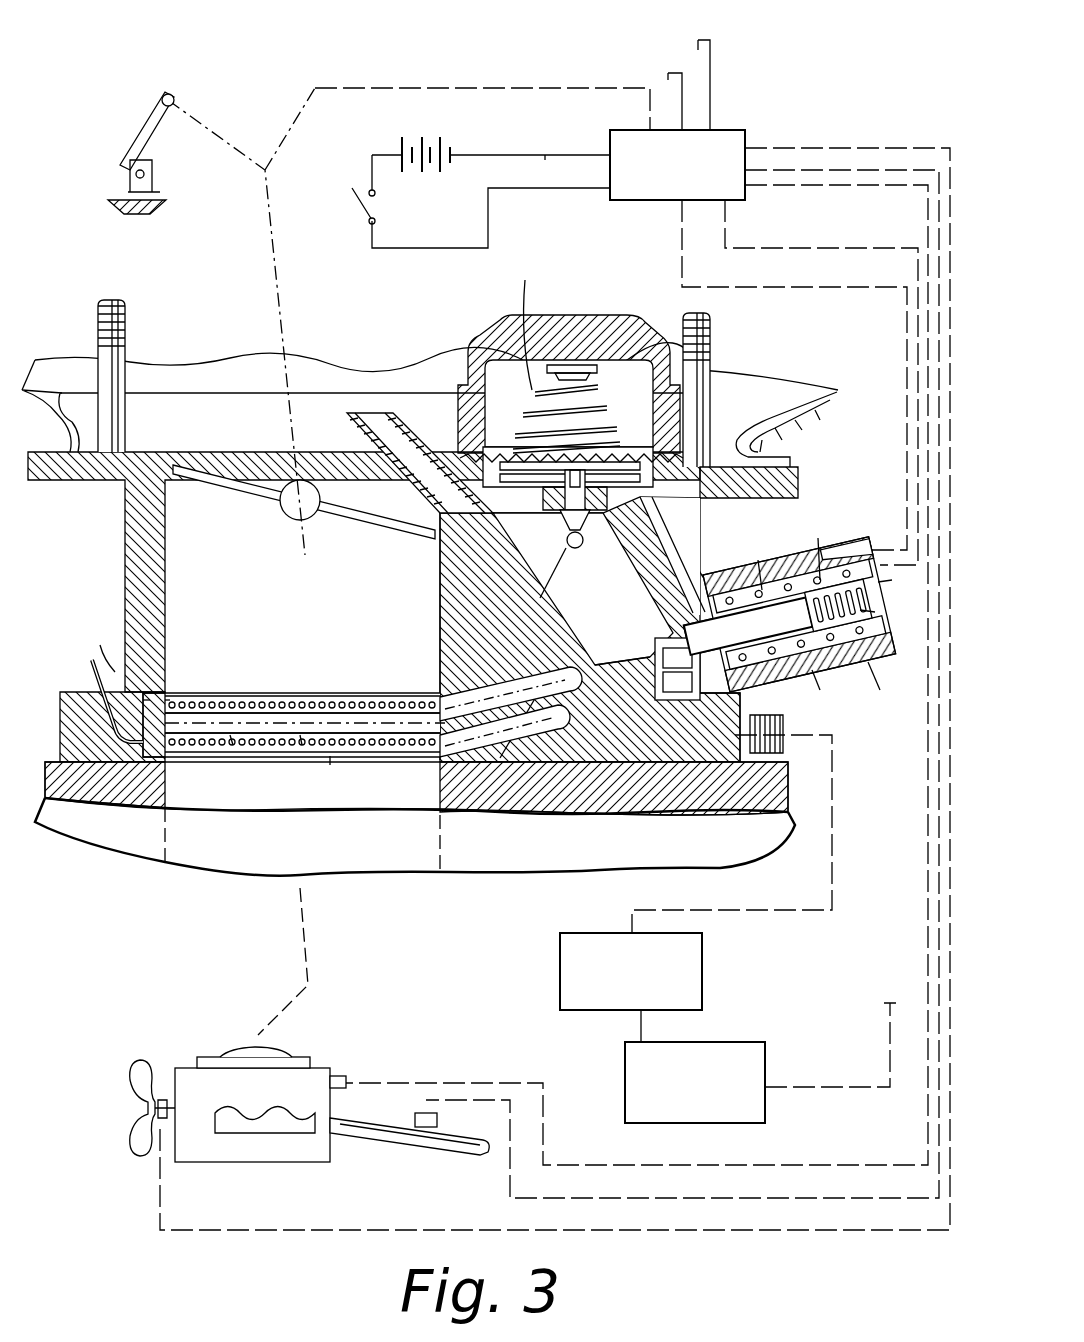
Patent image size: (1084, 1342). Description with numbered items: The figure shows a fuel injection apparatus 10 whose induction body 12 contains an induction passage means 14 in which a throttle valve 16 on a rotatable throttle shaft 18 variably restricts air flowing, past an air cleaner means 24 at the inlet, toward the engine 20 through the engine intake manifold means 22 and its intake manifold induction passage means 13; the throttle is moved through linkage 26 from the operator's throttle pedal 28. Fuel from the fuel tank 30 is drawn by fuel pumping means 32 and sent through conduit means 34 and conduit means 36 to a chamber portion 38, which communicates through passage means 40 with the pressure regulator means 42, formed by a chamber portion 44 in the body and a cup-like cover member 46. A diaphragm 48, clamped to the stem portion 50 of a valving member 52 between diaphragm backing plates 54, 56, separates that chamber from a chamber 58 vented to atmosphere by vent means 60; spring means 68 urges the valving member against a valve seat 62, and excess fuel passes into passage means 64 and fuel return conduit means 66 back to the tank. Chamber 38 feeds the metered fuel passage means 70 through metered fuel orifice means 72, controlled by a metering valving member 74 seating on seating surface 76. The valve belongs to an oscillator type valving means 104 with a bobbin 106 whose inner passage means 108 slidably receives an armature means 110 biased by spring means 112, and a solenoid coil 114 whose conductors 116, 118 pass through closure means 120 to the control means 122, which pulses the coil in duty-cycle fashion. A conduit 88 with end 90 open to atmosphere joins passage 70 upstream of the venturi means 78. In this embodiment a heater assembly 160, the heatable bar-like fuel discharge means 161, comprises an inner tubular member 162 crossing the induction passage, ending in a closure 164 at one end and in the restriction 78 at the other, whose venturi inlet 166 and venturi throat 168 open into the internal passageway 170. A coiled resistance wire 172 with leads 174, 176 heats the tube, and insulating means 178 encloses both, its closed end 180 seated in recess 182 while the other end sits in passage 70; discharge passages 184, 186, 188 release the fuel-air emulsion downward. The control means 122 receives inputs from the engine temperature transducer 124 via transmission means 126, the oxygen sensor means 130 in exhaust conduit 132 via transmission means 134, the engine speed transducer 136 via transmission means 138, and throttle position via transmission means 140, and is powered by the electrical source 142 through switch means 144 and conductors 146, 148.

The fuel injection apparatus 10 is at (180, 352).
The induction body 12 is at (122, 540).
The intake manifold induction passage means 13 is at (440, 868).
The induction passage means 14 is at (298, 560).
The throttle valve 16 is at (372, 522).
The throttle shaft 18 is at (290, 512).
The engine 20 is at (318, 1068).
The engine intake manifold means 22 is at (195, 870).
The air cleaner means 24 is at (68, 375).
The linkage and motion transmitting means 26 is at (265, 170).
The throttle pedal 28 is at (160, 100).
The fuel tank 30 is at (758, 1060).
The fuel pumping means 32 is at (702, 953).
The conduit means 34 is at (835, 888).
The conduit means 36 is at (712, 770).
The chamber portion 38 is at (680, 712).
The passage means 40 is at (668, 555).
The pressure regulator means 42 is at (572, 315).
The chamber portion 44 is at (722, 498).
The cover member 46 is at (648, 358).
The diaphragm 48 is at (470, 445).
The stem portion 50 is at (548, 430).
The valving member 52 is at (592, 500).
The diaphragm backing plate 54 is at (620, 474).
The diaphragm backing plate 56 is at (548, 490).
The chamber 58 is at (612, 460).
The vent means 60 is at (485, 382).
The valve seat 62 is at (565, 512).
The passage means 64 is at (557, 552).
The fuel return conduit means 66 is at (577, 548).
The spring means 68 is at (516, 323).
The metered fuel passage means 70 is at (600, 722).
The metered fuel orifice means 72 is at (655, 660).
The metering valving member 74 is at (655, 688).
The seating surface 76 is at (712, 570).
The venturi means 78 is at (530, 775).
The conduit 88 is at (512, 568).
The conduit end 90 is at (372, 410).
The oscillator type valving means 104 is at (872, 700).
The bobbin 106 is at (892, 680).
The inner passage means 108 is at (766, 598).
The armature means 110 is at (820, 688).
The spring means 112 is at (878, 612).
The solenoid coil 114 is at (820, 580).
The electrical conductor 116 is at (678, 268).
The electrical conductor 118 is at (755, 252).
The closure means 120 is at (878, 584).
The control means 122 is at (724, 128).
The engine temperature responsive transducer means 124 is at (348, 1070).
The transmission means 126 is at (862, 188).
The sensor means 130 is at (424, 1112).
The engine exhaust conduit means 132 is at (425, 1148).
The transmission means 134 is at (860, 170).
The engine speed responsive transducer means 136 is at (160, 1098).
The transmission means 138 is at (810, 146).
The transmission means 140 is at (446, 85).
The source of electrical potential 142 is at (404, 138).
The switch means 144 is at (352, 210).
The conductor means 146 is at (412, 248).
The conductor means 148 is at (544, 155).
The heater assembly 160 is at (291, 725).
The heatable bar-like fuel discharge means 161 is at (342, 700).
The inner tubular member 162 is at (312, 708).
The closure 164 is at (202, 710).
The venturi inlet 166 is at (568, 672).
The venturi throat 168 is at (522, 690).
The internal passageway 170 is at (426, 705).
The resistance wire 172 is at (244, 700).
The lead 174 is at (84, 648).
The lead 176 is at (100, 648).
The insulating means 178 is at (270, 700).
The closed end 180 is at (172, 695).
The recess 182 is at (166, 708).
The discharge passage 184 is at (235, 748).
The discharge passage 186 is at (300, 752).
The discharge passage 188 is at (358, 770).